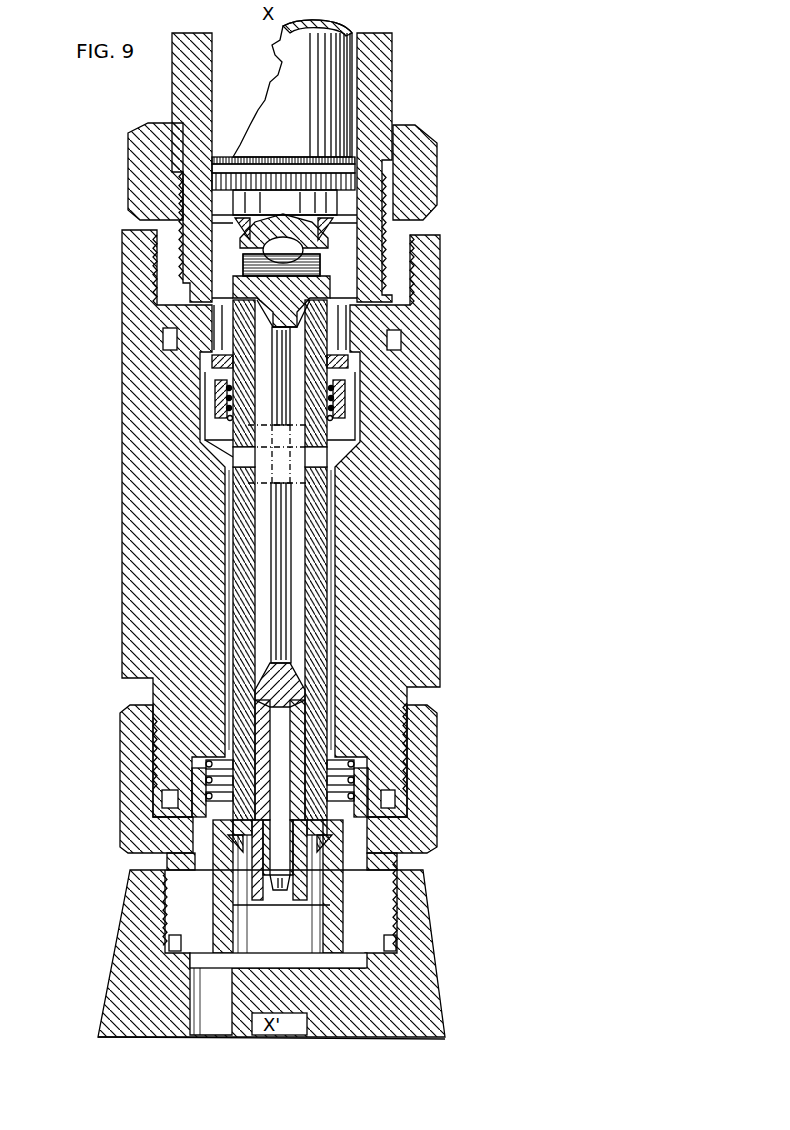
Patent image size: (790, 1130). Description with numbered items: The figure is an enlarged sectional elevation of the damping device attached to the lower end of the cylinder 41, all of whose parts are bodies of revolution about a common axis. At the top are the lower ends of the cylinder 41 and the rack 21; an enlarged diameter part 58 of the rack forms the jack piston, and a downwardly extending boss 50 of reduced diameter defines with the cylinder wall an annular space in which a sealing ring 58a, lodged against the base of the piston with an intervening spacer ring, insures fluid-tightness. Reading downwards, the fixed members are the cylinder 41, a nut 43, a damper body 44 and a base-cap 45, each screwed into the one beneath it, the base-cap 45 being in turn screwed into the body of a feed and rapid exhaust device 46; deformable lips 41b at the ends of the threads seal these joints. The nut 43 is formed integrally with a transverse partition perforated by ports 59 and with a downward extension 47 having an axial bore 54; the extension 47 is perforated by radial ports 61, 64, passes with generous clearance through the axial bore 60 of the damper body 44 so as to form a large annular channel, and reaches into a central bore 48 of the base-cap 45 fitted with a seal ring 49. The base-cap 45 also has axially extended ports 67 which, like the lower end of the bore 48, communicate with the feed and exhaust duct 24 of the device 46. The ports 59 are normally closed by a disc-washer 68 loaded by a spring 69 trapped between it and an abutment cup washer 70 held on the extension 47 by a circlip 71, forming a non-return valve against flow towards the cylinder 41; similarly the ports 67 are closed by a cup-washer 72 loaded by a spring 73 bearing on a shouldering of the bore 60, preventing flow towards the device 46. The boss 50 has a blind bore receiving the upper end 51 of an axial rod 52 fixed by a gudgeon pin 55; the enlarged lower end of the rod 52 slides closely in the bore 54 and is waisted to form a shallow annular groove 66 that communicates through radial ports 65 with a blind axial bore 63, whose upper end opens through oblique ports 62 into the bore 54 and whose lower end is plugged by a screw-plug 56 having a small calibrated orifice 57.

The rack 21 is at (268, 108).
The enlarged diameter part 58 is at (229, 168).
The cylinder 41 is at (383, 108).
The nut 43 is at (436, 160).
The sealing ring 58a is at (347, 228).
The boss 50 is at (270, 233).
The upper end of axial rod 51 is at (245, 283).
The gudgeon pin 55 is at (316, 268).
The deformable lips 41b is at (172, 332).
The ports 59 is at (214, 323).
The spring 69 is at (206, 385).
The disc-washer 68 is at (356, 363).
The abutment cup washer 70 is at (346, 419).
The circlip 71 is at (229, 422).
The radial ports 61 is at (247, 458).
The axial bore 60 is at (230, 557).
The axial rod 52 is at (288, 527).
The damper body 44 is at (428, 518).
The axial bore 54 is at (298, 596).
The downward extension 47 is at (318, 660).
The oblique ports 62 is at (256, 693).
The blind axial bore 63 is at (285, 736).
The base-cap 45 is at (434, 752).
The spring 73 is at (204, 762).
The cup-washer 72 is at (200, 779).
The radial ports 64 is at (313, 815).
The annular groove 66 is at (252, 838).
The radial ports 65 is at (328, 830).
The seal ring 49 is at (397, 856).
The screw-plug 56 is at (272, 892).
The calibrated orifice 57 is at (289, 895).
The ports 67 is at (212, 943).
The feed and rapid exhaust device 46 is at (430, 1002).
The central bore 48 is at (268, 962).
The feed and exhaust duct 24 is at (208, 1017).